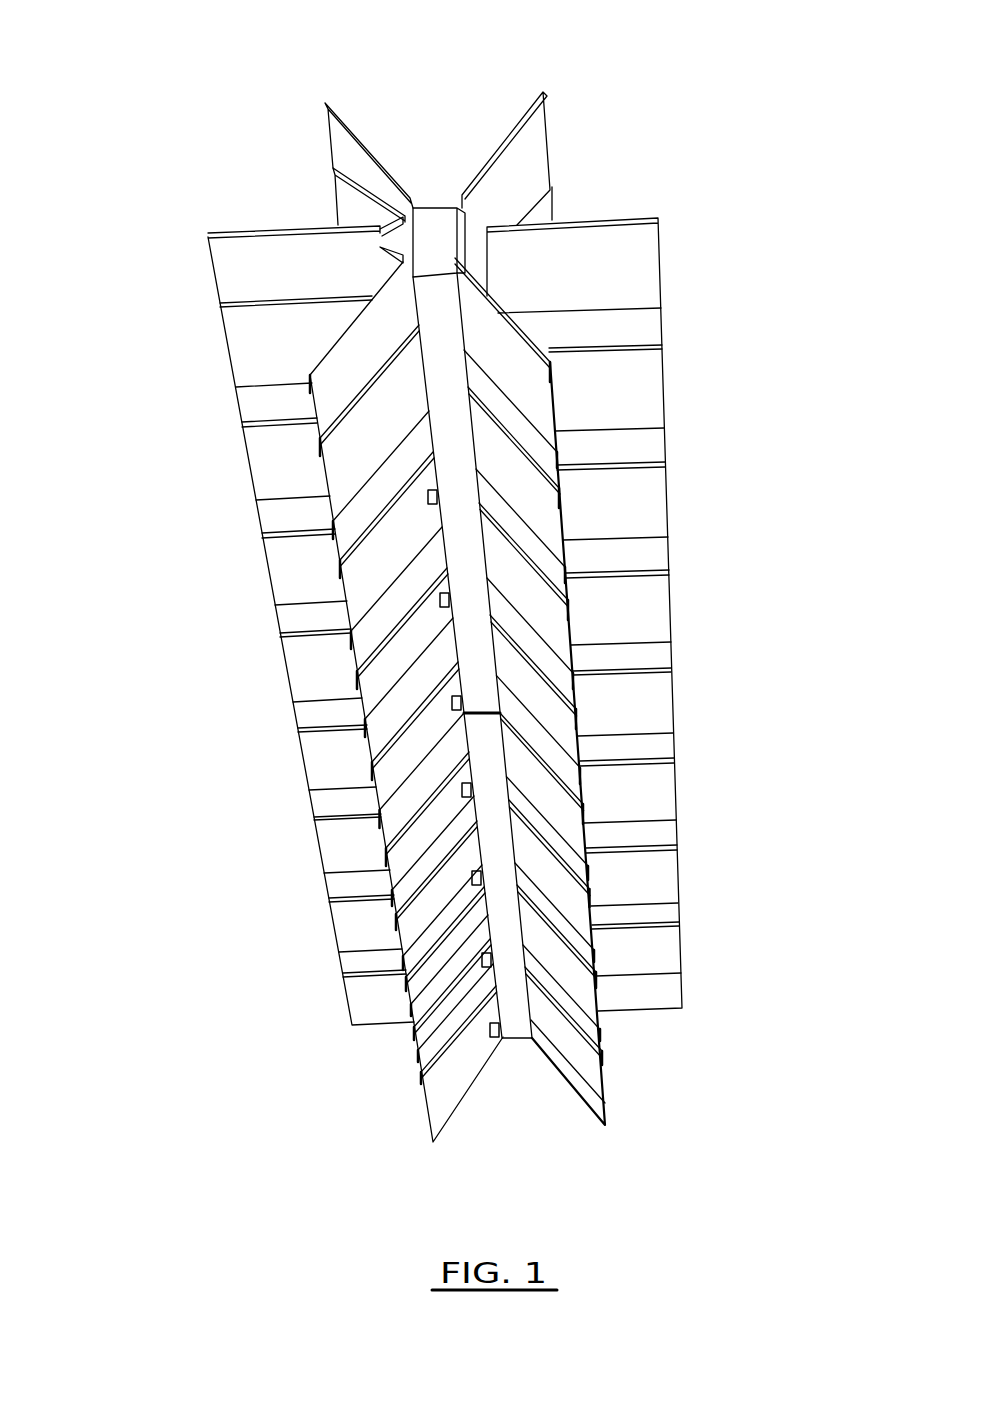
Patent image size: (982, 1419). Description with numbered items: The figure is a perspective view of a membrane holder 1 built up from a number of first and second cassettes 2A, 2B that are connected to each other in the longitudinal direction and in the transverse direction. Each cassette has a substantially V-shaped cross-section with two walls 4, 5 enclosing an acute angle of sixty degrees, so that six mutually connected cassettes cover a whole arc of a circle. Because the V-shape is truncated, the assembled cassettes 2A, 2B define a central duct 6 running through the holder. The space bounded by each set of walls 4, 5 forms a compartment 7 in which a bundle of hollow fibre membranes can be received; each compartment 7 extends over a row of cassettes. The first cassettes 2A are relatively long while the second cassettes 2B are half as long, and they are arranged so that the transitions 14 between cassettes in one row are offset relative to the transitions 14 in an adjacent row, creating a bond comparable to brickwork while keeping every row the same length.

The membrane holder 1 is at (203, 778).
The first cassette 2A is at (447, 335).
The second cassette 2B is at (250, 372).
The wall 4 is at (333, 98).
The wall 5 is at (361, 189).
The central duct 6 is at (428, 222).
The compartment 7 is at (470, 118).
The transition 14 is at (478, 712).